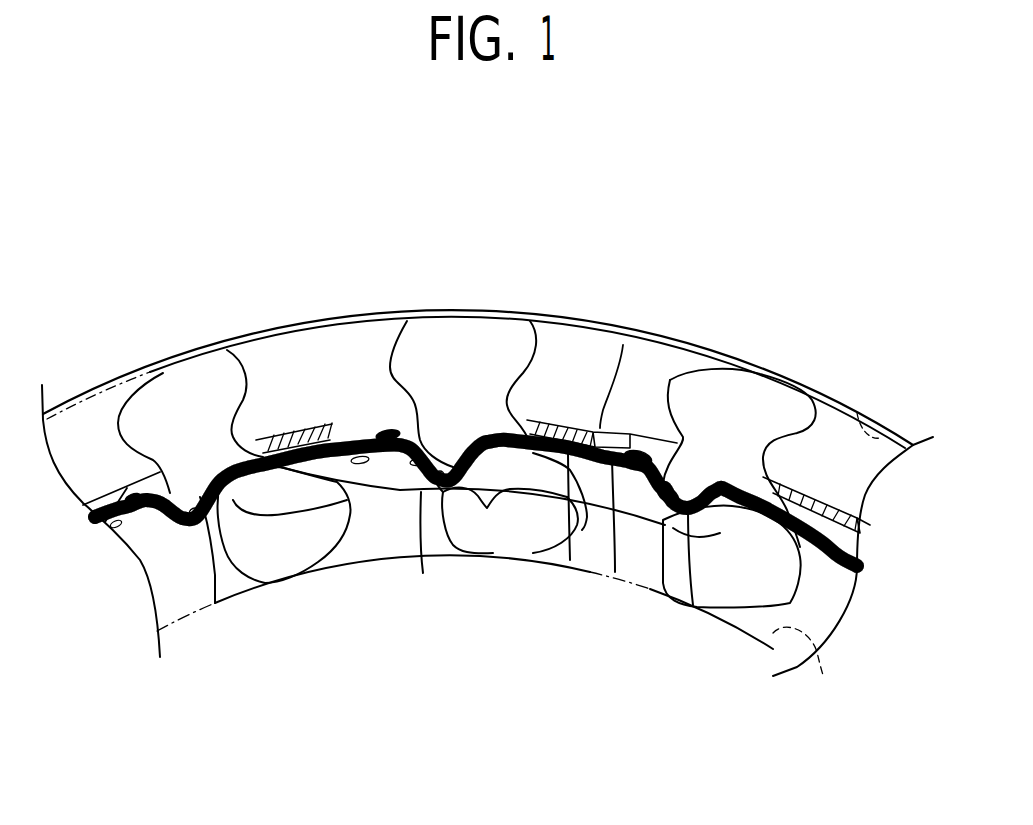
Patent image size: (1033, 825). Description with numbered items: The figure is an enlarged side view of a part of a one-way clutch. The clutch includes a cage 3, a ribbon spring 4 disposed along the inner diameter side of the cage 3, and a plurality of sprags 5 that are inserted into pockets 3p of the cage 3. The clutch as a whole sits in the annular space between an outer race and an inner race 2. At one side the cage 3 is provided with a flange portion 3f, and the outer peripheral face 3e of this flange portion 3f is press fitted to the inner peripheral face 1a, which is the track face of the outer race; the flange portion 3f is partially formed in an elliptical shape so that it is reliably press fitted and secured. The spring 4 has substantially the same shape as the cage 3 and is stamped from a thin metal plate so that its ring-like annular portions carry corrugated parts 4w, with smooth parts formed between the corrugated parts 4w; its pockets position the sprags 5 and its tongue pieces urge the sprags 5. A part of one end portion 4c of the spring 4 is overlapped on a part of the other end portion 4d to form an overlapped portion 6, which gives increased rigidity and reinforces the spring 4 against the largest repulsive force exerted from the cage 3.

The inner peripheral face 1a is at (880, 415).
The inner race 2 is at (822, 674).
The cage 3 is at (298, 432).
The outer peripheral face 3e is at (580, 320).
The flange portion 3f is at (625, 340).
The pocket 3p is at (392, 425).
The spring 4 is at (615, 572).
The one end portion 4c is at (670, 382).
The other end portion 4d is at (563, 553).
The corrugated part 4w is at (478, 400).
The sprag 5 is at (268, 560).
The overlapped portion 6 is at (487, 508).